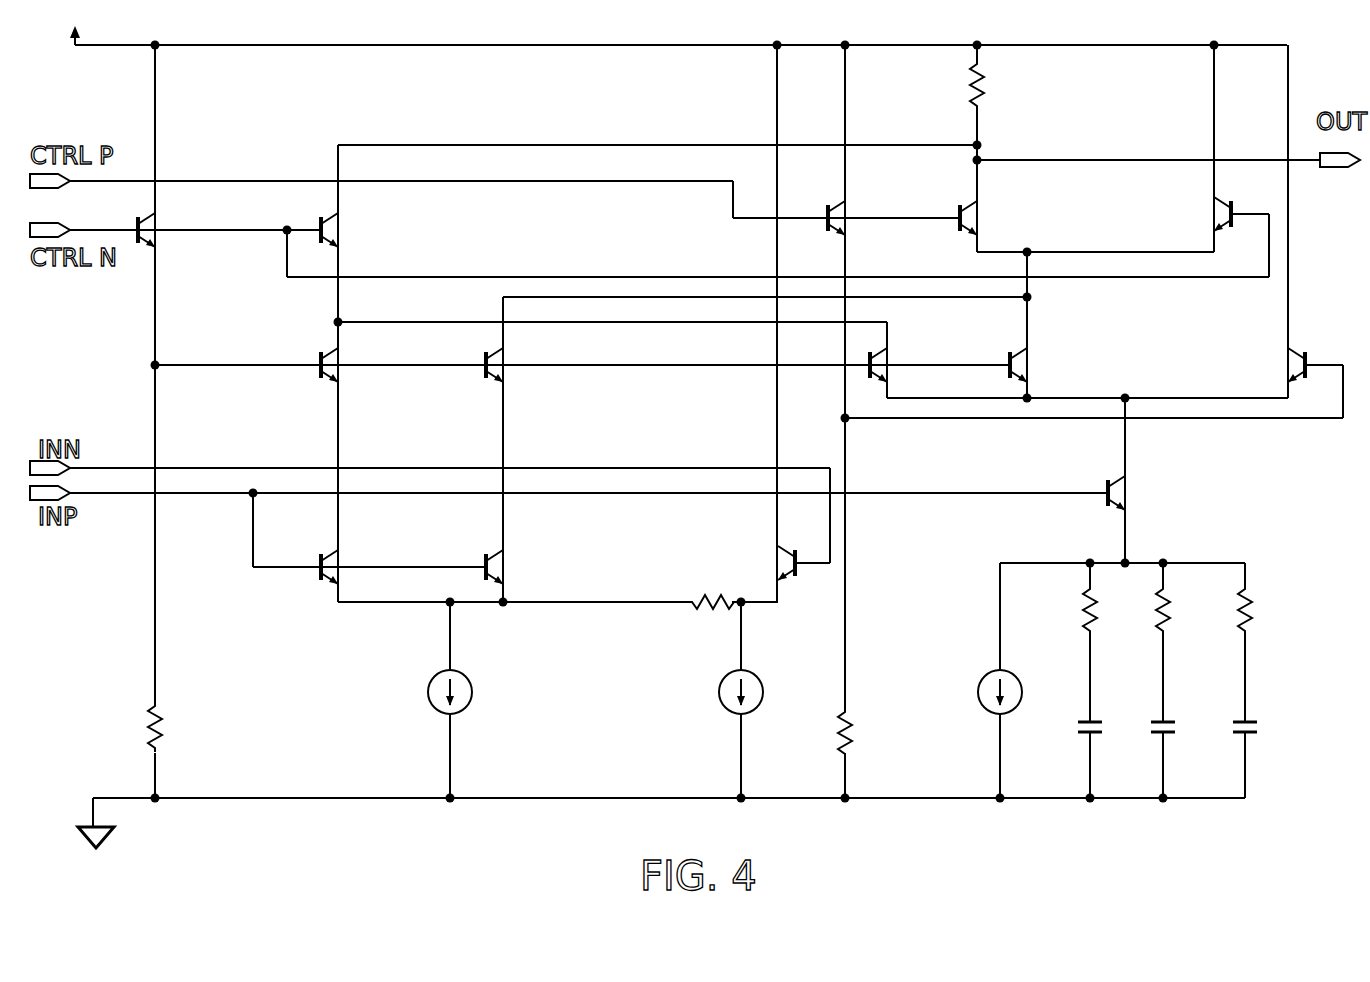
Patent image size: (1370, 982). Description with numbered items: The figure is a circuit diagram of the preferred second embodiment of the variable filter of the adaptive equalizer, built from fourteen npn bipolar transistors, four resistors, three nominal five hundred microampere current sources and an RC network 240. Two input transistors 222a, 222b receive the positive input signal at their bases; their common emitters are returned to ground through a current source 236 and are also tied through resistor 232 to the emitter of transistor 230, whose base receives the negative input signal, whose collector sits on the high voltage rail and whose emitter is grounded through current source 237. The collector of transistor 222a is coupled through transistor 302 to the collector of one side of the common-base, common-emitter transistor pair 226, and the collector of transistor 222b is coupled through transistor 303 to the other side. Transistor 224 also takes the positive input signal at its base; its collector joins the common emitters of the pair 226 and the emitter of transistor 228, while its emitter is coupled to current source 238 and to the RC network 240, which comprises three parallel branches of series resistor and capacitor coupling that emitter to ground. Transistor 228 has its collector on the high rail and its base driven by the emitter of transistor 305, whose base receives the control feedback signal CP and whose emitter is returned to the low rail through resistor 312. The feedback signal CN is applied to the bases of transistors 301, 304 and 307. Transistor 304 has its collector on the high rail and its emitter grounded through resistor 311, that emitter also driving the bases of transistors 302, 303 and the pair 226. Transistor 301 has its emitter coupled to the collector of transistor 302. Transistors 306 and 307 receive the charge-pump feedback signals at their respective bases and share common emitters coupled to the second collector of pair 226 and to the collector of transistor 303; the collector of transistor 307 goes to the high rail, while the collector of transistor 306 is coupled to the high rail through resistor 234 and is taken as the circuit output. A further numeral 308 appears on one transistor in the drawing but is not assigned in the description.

The bipolar transistor q6 301 is at (327, 217).
The bipolar transistor q7 302 is at (327, 352).
The bipolar transistor q8 303 is at (500, 380).
The bipolar transistor q9 304 is at (157, 253).
The bipolar transistor q10 305 is at (843, 206).
The bipolar transistor q11 306 is at (886, 340).
The bipolar transistor q12 307 is at (1020, 348).
The transistor q4 308 is at (1292, 342).
The bipolar transistor q1a 222a is at (330, 580).
The bipolar transistor q1b 222b is at (498, 553).
The bipolar transistor q2 224 is at (1118, 478).
The bipolar transistor pair q3a, q3b 226 is at (965, 205).
The bipolar transistor q4 228 is at (1218, 206).
The bipolar transistor q5 230 is at (787, 592).
The resistor r1 232 is at (688, 600).
The resistor r2 234 is at (992, 86).
The current source 236 is at (473, 688).
The current source 237 is at (720, 700).
The current source 238 is at (978, 680).
The RC network 240 is at (1302, 548).
The resistor r3 311 is at (150, 725).
The resistor r4 312 is at (840, 745).